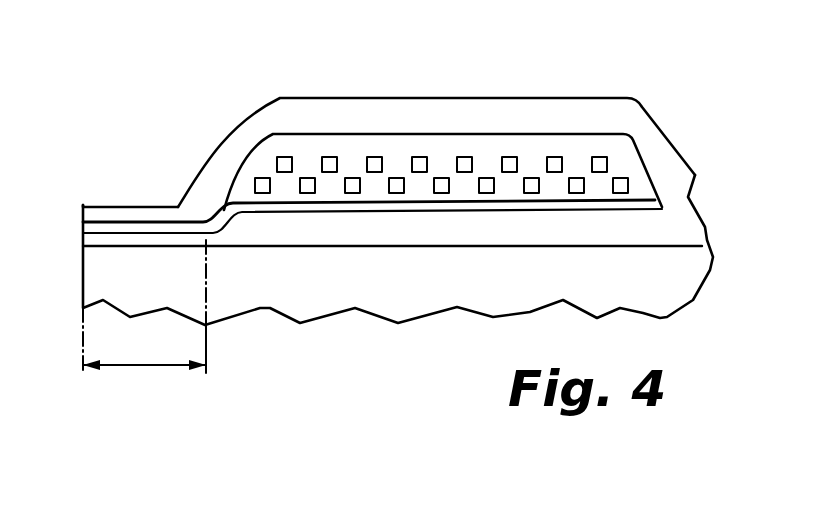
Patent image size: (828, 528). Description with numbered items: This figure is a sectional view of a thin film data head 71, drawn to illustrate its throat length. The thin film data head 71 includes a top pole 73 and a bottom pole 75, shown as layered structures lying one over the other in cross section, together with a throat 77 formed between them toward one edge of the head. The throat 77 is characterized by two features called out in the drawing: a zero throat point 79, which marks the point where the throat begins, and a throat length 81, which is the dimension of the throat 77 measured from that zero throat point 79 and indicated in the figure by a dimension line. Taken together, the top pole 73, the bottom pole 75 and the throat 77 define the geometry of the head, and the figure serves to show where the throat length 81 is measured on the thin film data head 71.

The thin film data head 71 is at (399, 171).
The top pole 73 is at (418, 117).
The bottom pole 75 is at (603, 227).
The throat 77 is at (90, 230).
The zero throat point 79 is at (202, 220).
The throat length 81 is at (128, 366).